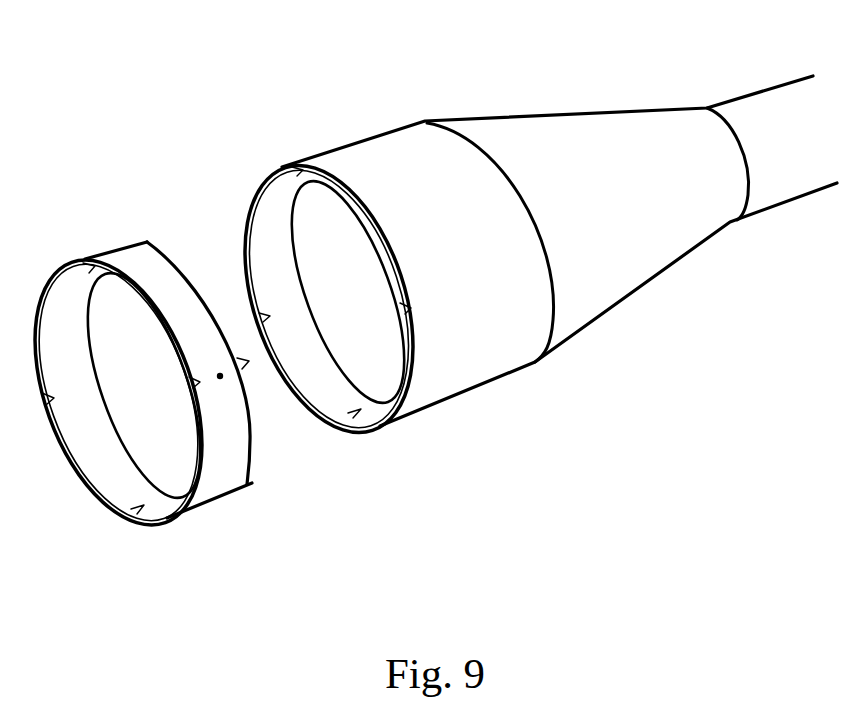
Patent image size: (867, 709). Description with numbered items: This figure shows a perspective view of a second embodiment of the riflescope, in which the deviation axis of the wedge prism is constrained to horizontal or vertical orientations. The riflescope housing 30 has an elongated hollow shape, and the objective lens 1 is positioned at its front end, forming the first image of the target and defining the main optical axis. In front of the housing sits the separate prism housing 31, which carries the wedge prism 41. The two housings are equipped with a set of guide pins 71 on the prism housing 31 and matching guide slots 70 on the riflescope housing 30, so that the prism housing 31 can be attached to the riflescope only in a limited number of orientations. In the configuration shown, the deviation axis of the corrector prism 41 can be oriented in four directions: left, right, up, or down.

The objective lens 1 is at (337, 237).
The housing 30 is at (525, 115).
The prism housing 31 is at (138, 266).
The wedge prism 41 is at (132, 418).
The guide slots 70 is at (417, 317).
The guide pins 71 is at (246, 365).